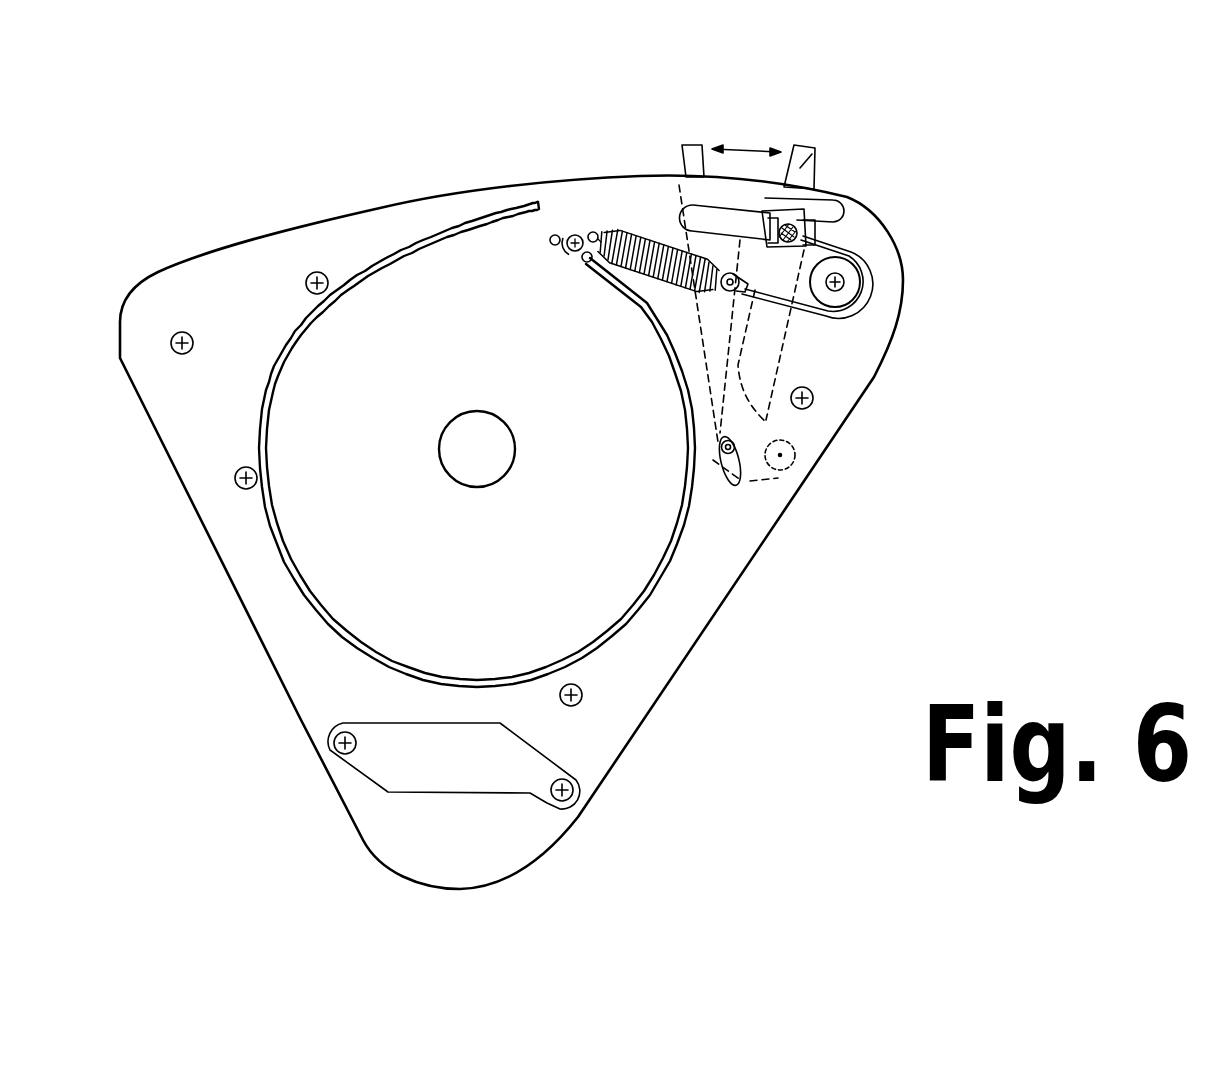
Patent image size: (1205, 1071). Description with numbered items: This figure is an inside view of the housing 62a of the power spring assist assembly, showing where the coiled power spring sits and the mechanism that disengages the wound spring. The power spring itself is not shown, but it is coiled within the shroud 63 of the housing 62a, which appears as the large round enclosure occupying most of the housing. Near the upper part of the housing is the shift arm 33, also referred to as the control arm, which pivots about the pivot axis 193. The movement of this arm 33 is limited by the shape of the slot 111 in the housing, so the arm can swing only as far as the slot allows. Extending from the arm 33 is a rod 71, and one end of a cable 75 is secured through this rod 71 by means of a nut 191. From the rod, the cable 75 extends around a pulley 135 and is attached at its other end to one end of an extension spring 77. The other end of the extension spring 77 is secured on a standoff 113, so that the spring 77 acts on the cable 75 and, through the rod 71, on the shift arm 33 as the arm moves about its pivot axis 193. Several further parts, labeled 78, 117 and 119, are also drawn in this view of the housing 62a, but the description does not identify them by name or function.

The shift arm 33 is at (810, 163).
The housing 62a is at (635, 683).
The shroud 63 is at (257, 443).
The rod 71 is at (773, 199).
The cable 75 is at (805, 240).
The extension spring 77 is at (647, 240).
The anchor screw 78 is at (573, 233).
The slot 111 is at (737, 227).
The standoff 113 is at (566, 236).
The pivot slot 117 is at (734, 485).
The pivot 119 is at (737, 453).
The pulley 135 is at (852, 288).
The nut 191 is at (812, 190).
The pivot axis 193 is at (798, 460).